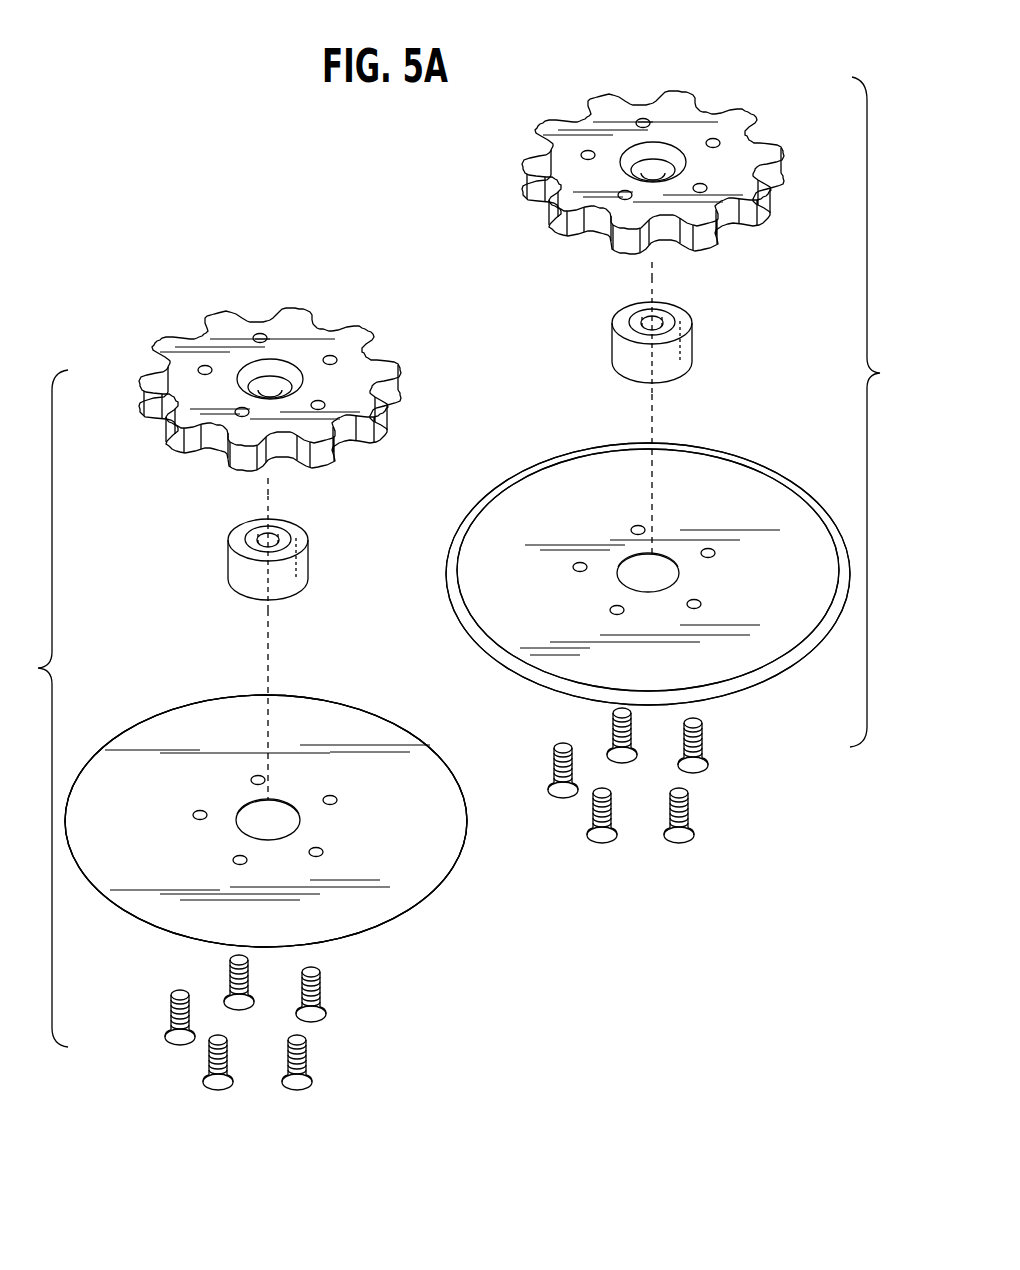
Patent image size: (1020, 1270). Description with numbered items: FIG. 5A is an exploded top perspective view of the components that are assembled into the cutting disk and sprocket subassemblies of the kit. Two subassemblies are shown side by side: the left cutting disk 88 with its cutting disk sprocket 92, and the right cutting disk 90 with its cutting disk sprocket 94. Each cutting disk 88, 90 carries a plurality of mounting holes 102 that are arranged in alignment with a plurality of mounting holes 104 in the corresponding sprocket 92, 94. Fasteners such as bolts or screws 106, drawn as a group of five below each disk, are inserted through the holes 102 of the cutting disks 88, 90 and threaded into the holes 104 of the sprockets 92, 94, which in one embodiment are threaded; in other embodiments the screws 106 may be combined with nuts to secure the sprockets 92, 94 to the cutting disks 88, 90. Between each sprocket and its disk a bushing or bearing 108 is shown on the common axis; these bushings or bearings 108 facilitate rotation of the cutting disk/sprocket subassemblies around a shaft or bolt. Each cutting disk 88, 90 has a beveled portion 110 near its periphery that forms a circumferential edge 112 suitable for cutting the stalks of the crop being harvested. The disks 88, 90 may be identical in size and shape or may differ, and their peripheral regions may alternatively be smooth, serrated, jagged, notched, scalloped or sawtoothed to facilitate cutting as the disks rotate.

The left cutting disk 88 is at (752, 515).
The right cutting disk 90 is at (110, 785).
The cutting disk sprocket 92 is at (740, 150).
The cutting disk sprocket 94 is at (180, 375).
The mounting holes 102 is at (258, 774).
The mounting holes 104 is at (713, 138).
The screws 106 is at (172, 1003).
The bushings or bearings 108 is at (308, 562).
The beveled portion 110 is at (378, 950).
The circumferential edge 112 is at (428, 906).